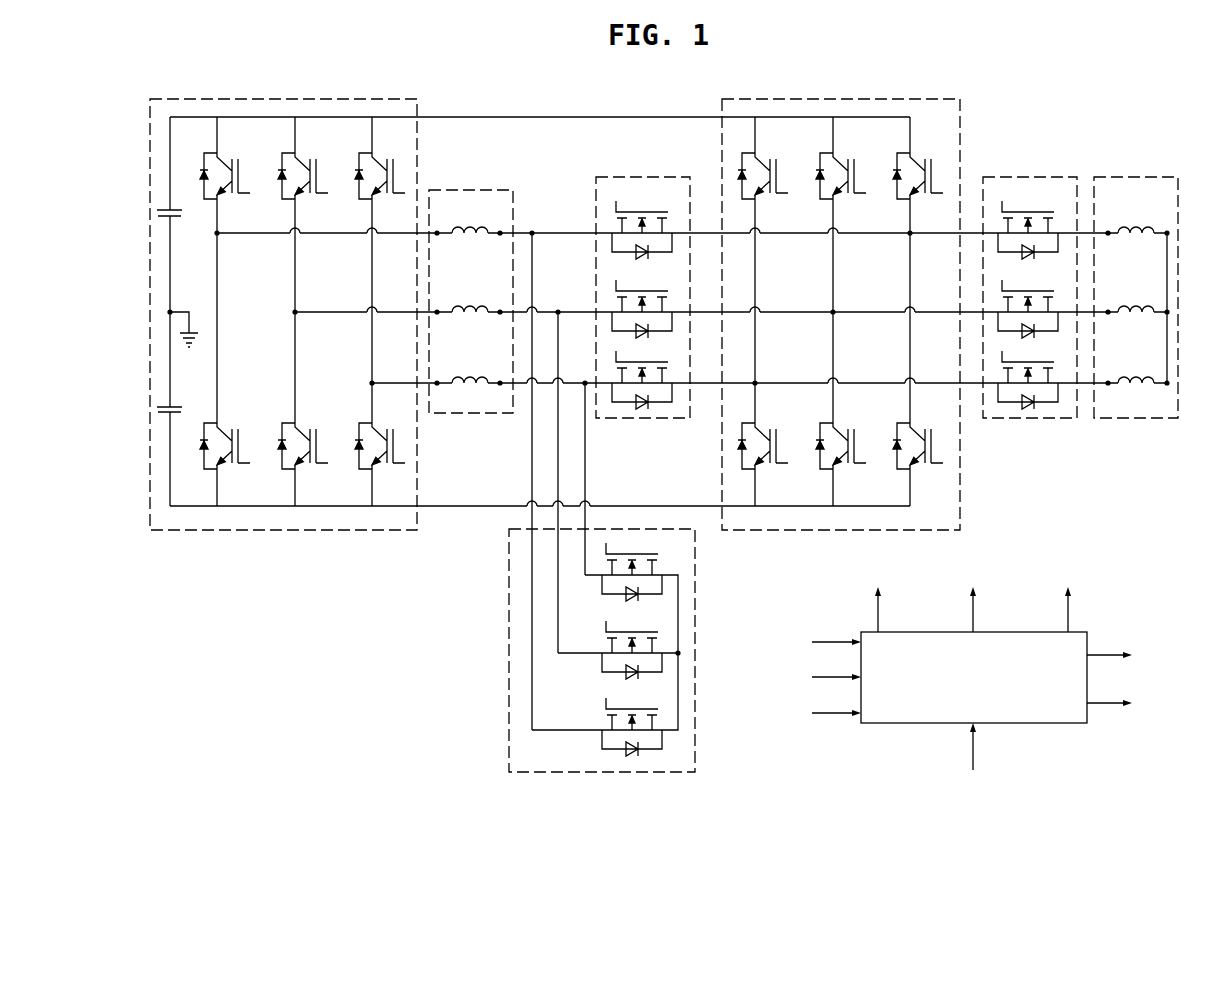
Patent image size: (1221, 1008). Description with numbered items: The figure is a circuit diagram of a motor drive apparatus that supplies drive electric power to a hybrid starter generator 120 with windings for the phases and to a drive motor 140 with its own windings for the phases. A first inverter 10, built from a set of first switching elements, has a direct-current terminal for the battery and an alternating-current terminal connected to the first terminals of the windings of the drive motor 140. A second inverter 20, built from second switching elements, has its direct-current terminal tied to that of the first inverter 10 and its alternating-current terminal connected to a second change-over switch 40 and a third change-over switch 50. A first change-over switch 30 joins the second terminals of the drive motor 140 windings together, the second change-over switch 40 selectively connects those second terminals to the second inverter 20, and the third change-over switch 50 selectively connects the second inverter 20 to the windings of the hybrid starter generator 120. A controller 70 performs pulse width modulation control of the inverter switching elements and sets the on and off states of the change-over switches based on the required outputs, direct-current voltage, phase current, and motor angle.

The first inverter 10 is at (232, 530).
The second inverter 20 is at (960, 489).
The first change-over switch 30 is at (509, 652).
The second change-over switch 40 is at (650, 177).
The third change-over switch 50 is at (1037, 177).
The controller 70 is at (1072, 723).
The hybrid starter generator 120 is at (1144, 177).
The drive motor 140 is at (485, 190).